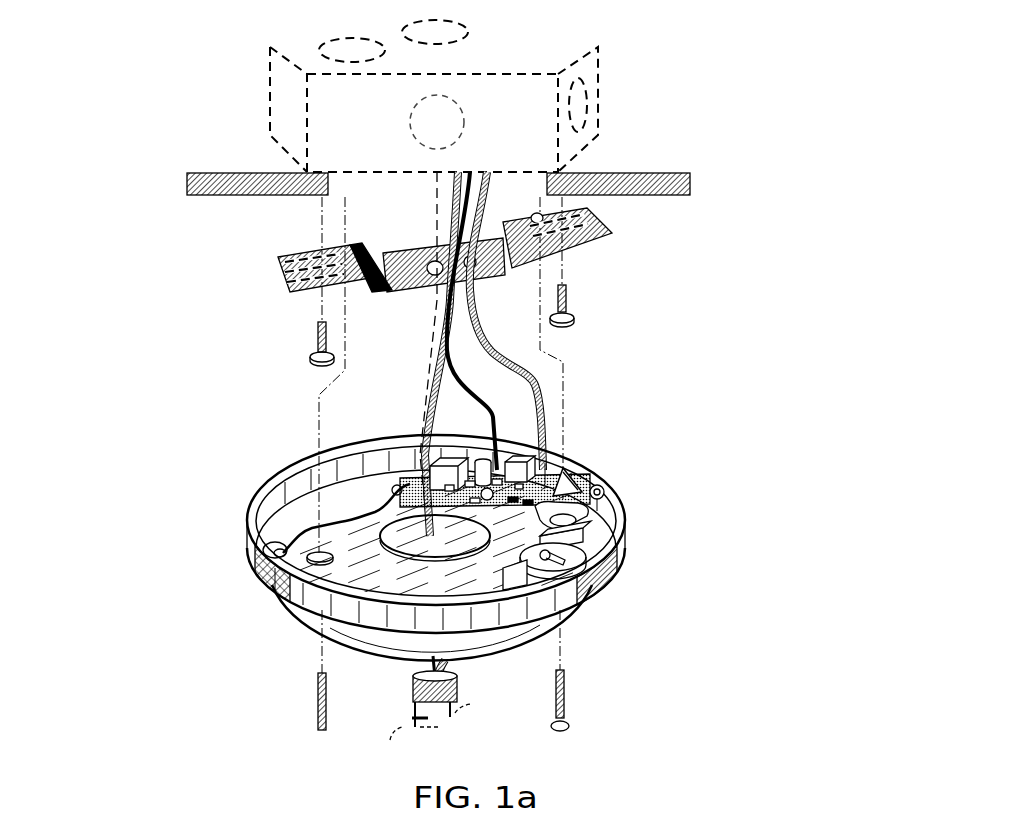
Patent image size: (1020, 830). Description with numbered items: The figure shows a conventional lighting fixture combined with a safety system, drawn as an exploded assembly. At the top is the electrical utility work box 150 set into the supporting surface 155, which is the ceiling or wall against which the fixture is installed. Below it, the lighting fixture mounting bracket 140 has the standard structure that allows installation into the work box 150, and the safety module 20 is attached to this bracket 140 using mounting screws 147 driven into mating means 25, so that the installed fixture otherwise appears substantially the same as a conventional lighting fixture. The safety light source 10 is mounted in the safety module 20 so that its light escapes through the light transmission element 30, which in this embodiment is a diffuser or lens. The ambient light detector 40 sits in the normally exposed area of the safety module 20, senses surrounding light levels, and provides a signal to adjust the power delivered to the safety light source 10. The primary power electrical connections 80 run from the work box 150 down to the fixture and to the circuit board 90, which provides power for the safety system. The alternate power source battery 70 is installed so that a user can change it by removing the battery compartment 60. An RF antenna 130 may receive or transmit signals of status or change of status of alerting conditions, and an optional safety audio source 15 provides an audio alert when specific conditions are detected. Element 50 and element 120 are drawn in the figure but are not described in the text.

The safety light source 10 is at (263, 547).
The safety audio source 15 is at (585, 505).
The safety module 20 is at (255, 495).
The mating means 25 is at (457, 692).
The light transmission element 30 is at (255, 573).
The ambient light detector 40 is at (605, 493).
The printed circuit board 50 is at (530, 462).
The battery compartment 60 is at (610, 548).
The alternate power source battery 70 is at (612, 580).
The primary power electrical connections 80 is at (545, 413).
The circuit board 90 is at (590, 530).
The bracket 120 is at (418, 715).
The RF antenna 130 is at (590, 470).
The lighting fixture mounting bracket 140 is at (278, 278).
The mounting screws 147 is at (552, 301).
The electrical utility work box 150 is at (343, 147).
The supporting surface 155 is at (228, 202).